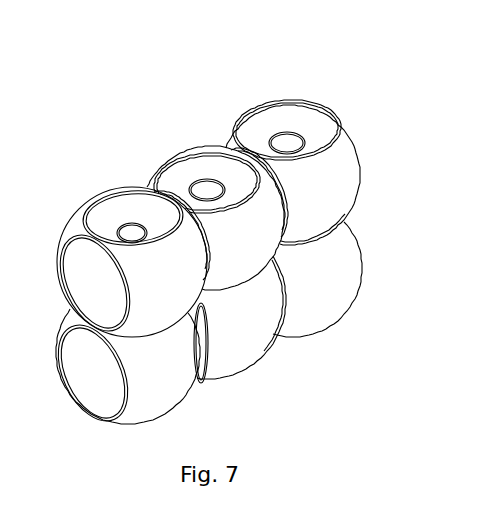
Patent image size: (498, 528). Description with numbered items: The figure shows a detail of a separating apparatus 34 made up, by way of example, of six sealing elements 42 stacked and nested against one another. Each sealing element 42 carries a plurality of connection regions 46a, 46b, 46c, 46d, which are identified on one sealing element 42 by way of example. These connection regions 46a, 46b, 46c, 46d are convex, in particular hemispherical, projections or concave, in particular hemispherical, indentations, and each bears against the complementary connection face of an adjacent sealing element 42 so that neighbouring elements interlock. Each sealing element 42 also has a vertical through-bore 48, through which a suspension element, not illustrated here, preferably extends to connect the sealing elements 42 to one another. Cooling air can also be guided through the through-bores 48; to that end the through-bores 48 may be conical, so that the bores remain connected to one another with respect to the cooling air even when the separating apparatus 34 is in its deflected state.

The separating apparatus 34 is at (209, 244).
The sealing element 42 is at (341, 150).
The connection region 46a is at (115, 196).
The connection region 46b is at (152, 334).
The connection region 46c is at (203, 232).
The connection region 46d is at (91, 274).
The through-bore 48 is at (205, 188).